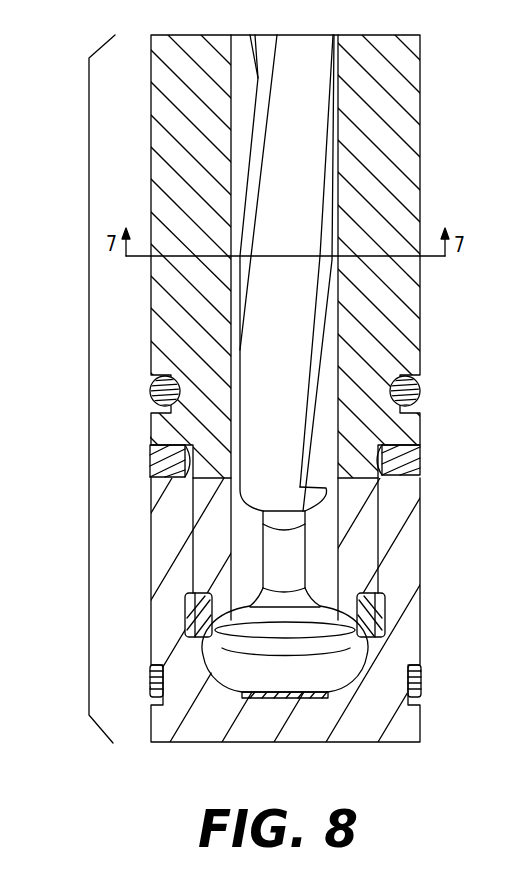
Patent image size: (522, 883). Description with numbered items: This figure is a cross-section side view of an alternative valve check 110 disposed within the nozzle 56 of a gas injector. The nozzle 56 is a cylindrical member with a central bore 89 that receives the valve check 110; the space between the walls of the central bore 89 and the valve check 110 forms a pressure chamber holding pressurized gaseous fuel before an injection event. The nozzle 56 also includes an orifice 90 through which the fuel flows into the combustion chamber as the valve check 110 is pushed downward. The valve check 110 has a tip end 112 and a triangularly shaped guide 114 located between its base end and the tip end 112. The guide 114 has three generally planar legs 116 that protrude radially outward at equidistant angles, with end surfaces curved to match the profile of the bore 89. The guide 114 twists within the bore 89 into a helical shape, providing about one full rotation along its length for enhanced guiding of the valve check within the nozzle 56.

The nozzle 56 is at (89, 383).
The central bore 89 is at (332, 327).
The orifice 90 is at (358, 597).
The valve check 110 is at (394, 297).
The tip end 112 is at (395, 640).
The guide 114 is at (300, 150).
The legs 116 is at (300, 457).